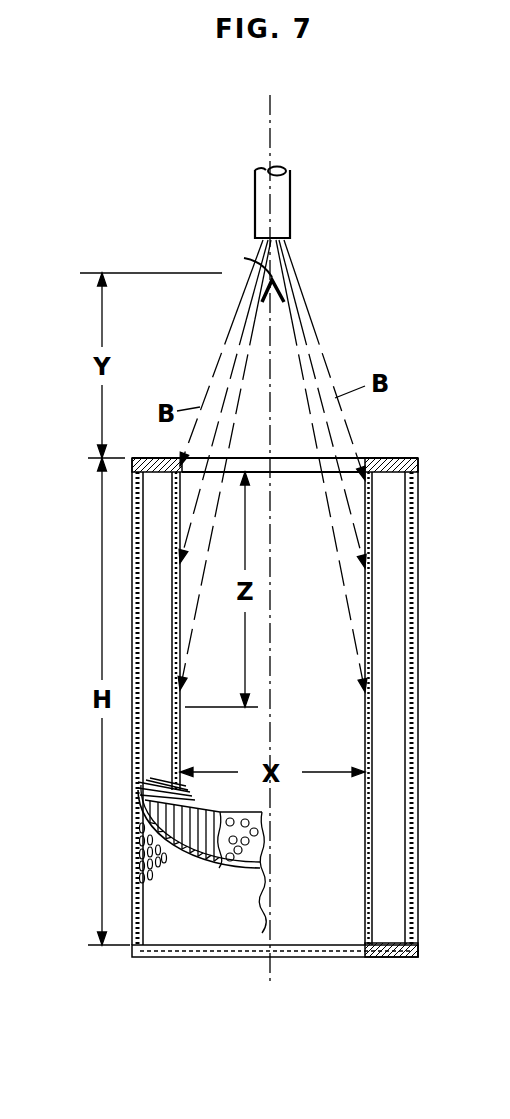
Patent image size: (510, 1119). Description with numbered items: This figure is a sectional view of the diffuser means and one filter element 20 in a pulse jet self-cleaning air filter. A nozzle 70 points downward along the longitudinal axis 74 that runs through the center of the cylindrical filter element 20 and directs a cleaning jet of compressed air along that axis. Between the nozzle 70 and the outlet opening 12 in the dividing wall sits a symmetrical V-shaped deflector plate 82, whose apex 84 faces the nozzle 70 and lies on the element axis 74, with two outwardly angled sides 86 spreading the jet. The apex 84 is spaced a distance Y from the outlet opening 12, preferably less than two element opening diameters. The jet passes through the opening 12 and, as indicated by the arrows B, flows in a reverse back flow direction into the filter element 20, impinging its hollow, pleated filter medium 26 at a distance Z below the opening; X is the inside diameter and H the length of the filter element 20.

The outlet opening 12 is at (345, 459).
The filter element 20 is at (310, 682).
The filter medium 26 is at (188, 796).
The nozzle 70 is at (283, 194).
The longitudinal axis 74 is at (272, 130).
The V-shaped deflector plate 82 is at (300, 291).
The apex 84 is at (239, 260).
The outwardly angled sides 86 is at (262, 294).